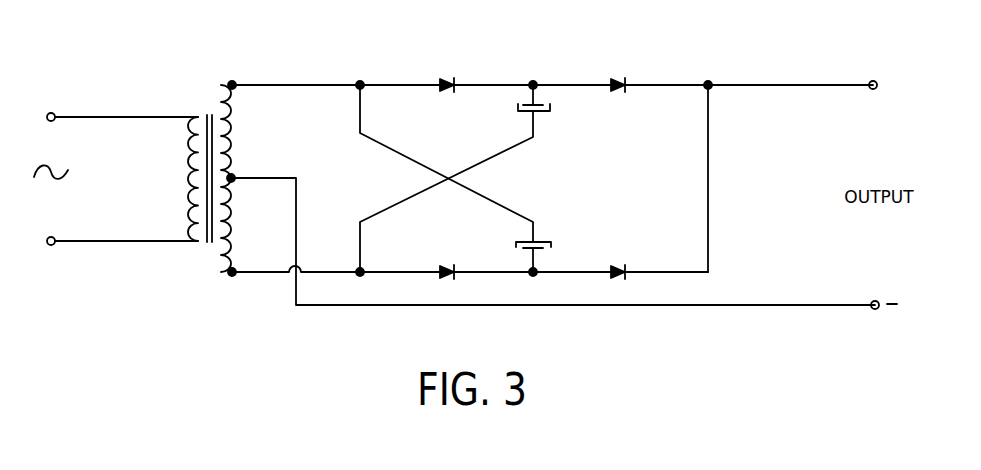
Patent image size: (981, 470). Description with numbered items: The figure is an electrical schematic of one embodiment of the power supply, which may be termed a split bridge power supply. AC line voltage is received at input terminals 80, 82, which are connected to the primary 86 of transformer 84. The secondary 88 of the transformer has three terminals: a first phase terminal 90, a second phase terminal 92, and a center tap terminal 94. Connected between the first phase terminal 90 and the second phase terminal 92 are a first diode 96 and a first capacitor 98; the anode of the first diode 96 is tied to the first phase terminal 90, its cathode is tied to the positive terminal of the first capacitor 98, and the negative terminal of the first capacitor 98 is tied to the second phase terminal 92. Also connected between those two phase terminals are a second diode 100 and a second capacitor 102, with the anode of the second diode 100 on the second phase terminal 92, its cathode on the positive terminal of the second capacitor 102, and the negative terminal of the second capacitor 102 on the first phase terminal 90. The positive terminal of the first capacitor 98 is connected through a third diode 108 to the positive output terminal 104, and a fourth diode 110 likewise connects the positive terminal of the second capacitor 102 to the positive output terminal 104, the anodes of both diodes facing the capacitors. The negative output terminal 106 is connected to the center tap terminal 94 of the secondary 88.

The input terminal 80 is at (53, 112).
The input terminal 82 is at (55, 245).
The transformer 84 is at (205, 100).
The primary 86 is at (193, 112).
The secondary 88 is at (226, 84).
The first phase terminal 90 is at (233, 83).
The second phase terminal 92 is at (236, 276).
The center tap terminal 94 is at (233, 176).
The first diode 96 is at (447, 79).
The first capacitor 98 is at (550, 107).
The second diode 100 is at (447, 264).
The second capacitor 102 is at (546, 237).
The positive output terminal 104 is at (870, 81).
The negative output terminal 106 is at (872, 309).
The third diode 108 is at (618, 79).
The fourth diode 110 is at (620, 264).